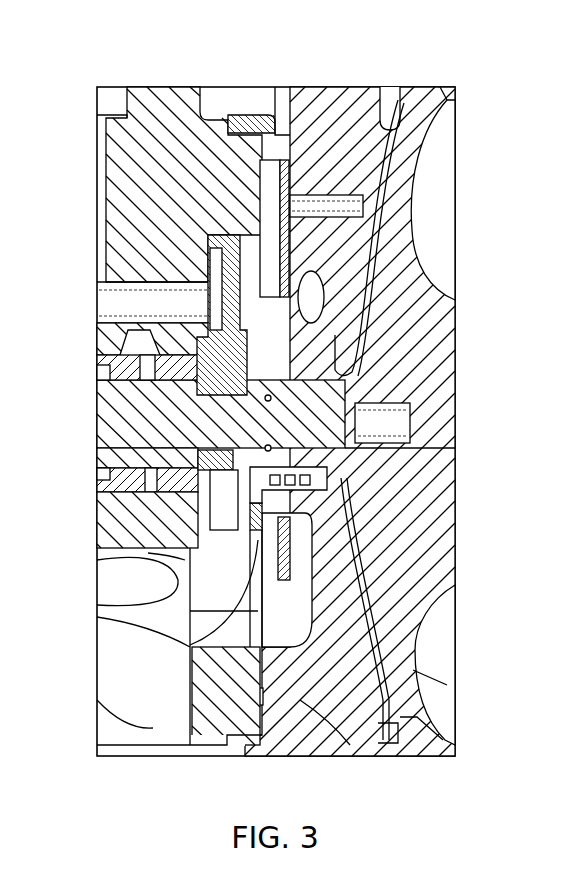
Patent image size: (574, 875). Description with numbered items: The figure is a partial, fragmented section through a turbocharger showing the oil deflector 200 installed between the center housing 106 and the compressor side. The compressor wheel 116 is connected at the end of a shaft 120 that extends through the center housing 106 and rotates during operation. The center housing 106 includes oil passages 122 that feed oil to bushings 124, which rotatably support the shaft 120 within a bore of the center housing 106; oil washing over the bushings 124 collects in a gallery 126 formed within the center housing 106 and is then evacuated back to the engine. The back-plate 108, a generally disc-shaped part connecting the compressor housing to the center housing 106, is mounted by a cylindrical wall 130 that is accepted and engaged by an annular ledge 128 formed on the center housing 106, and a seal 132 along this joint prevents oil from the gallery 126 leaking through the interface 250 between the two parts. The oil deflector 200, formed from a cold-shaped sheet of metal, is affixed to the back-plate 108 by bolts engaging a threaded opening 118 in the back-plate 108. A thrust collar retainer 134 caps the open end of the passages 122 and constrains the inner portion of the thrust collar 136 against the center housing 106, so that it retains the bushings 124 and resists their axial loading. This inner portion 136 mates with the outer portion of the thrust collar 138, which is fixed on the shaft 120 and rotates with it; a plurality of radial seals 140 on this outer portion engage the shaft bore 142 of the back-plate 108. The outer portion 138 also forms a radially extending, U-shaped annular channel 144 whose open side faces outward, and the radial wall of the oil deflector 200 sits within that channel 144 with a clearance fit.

The center housing 106 is at (163, 100).
The back-plate 108 is at (372, 98).
The compressor wheel 116 is at (422, 300).
The threaded opening 118 is at (320, 197).
The shaft 120 is at (415, 458).
The oil passages 122 is at (125, 311).
The bushings 124 is at (100, 488).
The gallery 126 is at (345, 330).
The annular ledge 128 is at (255, 115).
The cylindrical wall 130 is at (335, 722).
The seal 132 is at (245, 700).
The thrust collar retainer 134 is at (225, 215).
The inner portion of the thrust collar 136 is at (150, 553).
The outer portion of the thrust collar 138 is at (350, 497).
The radial seals 140 is at (385, 392).
The shaft bore 142 is at (330, 528).
The annular channel 144 is at (185, 635).
The oil deflector 200 is at (300, 247).
The interface 250 is at (300, 672).